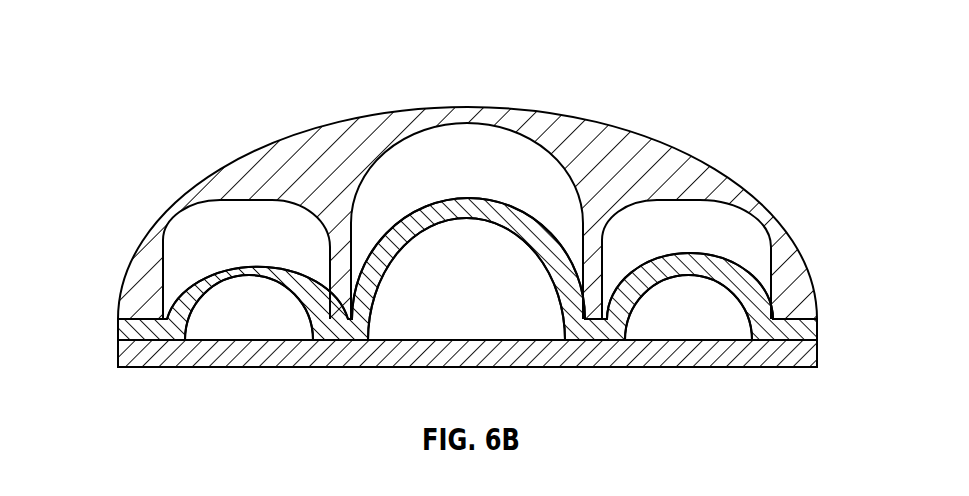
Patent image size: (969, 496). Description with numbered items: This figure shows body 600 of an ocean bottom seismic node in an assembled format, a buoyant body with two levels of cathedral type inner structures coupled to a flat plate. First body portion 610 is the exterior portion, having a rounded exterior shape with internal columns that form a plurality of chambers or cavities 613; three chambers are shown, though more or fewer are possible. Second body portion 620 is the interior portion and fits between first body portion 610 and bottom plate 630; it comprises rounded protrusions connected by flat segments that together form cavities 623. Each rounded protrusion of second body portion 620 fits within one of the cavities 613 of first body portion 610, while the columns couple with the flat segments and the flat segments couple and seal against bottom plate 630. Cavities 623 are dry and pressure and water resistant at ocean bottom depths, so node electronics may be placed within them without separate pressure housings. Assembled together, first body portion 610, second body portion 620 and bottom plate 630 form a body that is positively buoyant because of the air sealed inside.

The body 600 is at (181, 93).
The first body portion 610 is at (133, 293).
The chambers/cavities 613 is at (695, 228).
The second body portion 620 is at (130, 332).
The chambers/cavities 623 is at (717, 307).
The bottom plate 630 is at (133, 362).